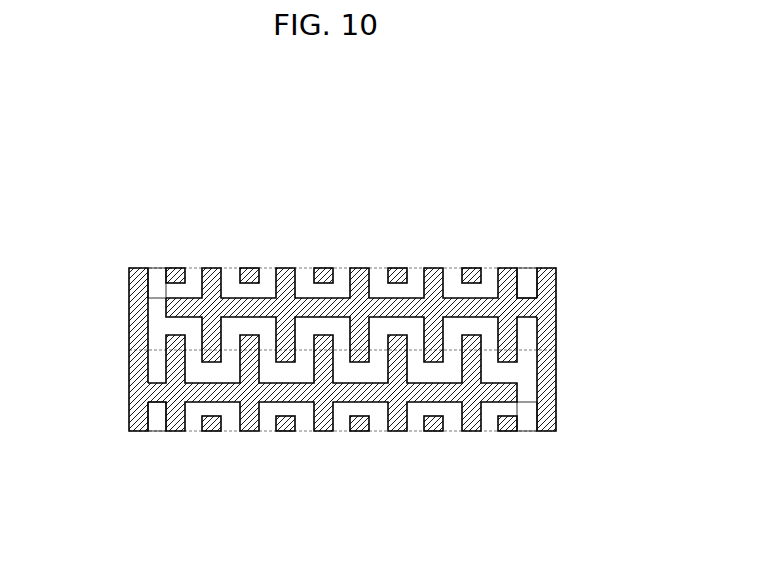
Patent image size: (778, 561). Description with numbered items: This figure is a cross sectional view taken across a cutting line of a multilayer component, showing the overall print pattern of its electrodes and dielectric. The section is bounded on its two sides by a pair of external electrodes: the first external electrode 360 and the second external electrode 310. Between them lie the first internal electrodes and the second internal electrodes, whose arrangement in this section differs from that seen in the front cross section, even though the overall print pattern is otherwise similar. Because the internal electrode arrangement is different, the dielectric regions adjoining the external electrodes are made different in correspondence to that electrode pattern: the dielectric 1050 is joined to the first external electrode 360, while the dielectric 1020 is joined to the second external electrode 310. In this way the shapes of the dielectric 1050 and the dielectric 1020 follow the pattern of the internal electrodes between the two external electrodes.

The second external electrode 310 is at (545, 268).
The first external electrode 360 is at (128, 288).
The dielectric 1020 is at (525, 270).
The dielectric 1050 is at (157, 275).